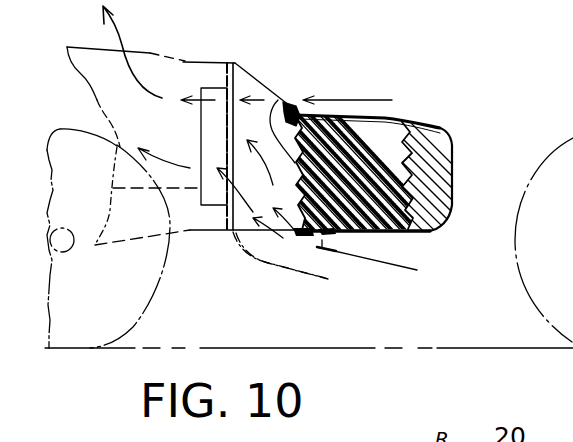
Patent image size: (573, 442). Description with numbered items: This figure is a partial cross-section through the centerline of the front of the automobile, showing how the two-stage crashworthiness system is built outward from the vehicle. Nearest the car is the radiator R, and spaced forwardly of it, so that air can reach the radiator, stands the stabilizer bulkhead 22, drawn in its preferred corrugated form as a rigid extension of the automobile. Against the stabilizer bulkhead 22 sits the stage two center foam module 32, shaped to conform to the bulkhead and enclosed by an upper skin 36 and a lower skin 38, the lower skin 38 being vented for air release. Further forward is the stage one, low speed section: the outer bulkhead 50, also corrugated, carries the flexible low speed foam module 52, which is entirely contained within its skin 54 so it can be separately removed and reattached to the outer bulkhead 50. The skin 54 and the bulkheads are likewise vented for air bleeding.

The radiator R is at (213, 88).
The stabilizer bulkhead 22 is at (291, 107).
The center foam module 32 is at (392, 120).
The upper skin 36 is at (336, 107).
The lower skin 38 is at (340, 233).
The outer bulkhead 50 is at (415, 167).
The low speed foam module 52 is at (440, 142).
The skin 54 is at (420, 125).